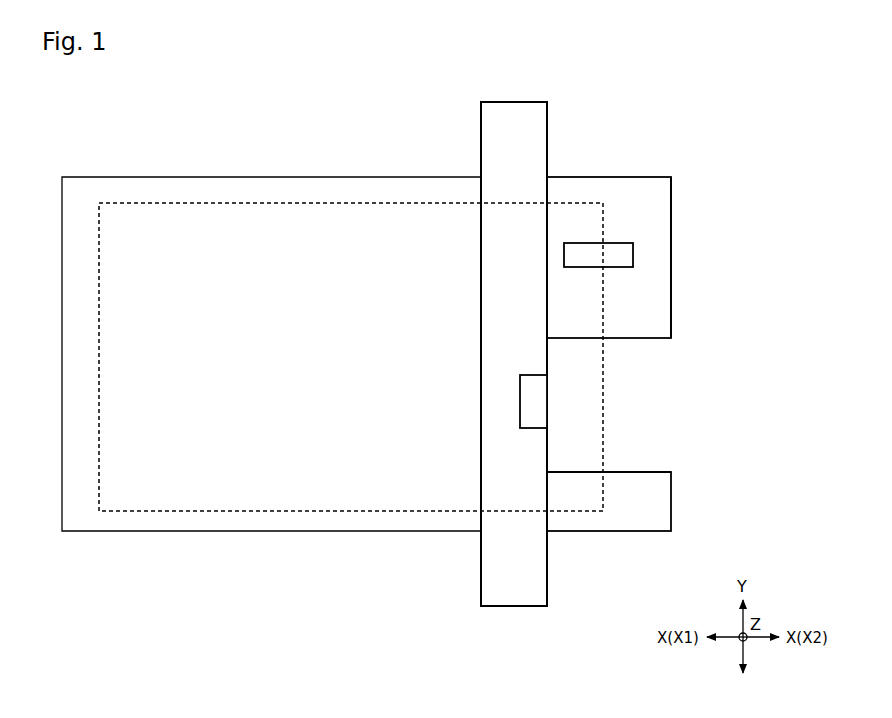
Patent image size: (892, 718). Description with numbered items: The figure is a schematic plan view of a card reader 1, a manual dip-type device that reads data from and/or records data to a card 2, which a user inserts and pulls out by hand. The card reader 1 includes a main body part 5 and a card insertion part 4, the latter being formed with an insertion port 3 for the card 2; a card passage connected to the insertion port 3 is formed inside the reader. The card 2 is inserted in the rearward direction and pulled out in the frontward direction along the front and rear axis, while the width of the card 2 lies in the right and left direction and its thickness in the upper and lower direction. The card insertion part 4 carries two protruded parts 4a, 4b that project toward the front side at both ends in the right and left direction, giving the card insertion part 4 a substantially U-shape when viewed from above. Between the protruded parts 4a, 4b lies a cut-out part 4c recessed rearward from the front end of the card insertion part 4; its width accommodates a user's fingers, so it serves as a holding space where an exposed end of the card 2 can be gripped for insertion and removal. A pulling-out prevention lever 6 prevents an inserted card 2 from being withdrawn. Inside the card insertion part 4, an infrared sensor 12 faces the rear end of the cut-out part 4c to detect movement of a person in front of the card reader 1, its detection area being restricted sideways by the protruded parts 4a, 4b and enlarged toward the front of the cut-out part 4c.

The card reader 1 is at (728, 119).
The card 2 is at (190, 203).
The insertion port 3 is at (690, 310).
The card insertion part 4 is at (586, 177).
The protruded part 4a is at (671, 224).
The protruded part 4b is at (671, 503).
The cut-out part 4c is at (650, 471).
The main body part 5 is at (300, 177).
The pulling-out prevention lever 6 is at (620, 243).
The infrared sensor 12 is at (533, 375).